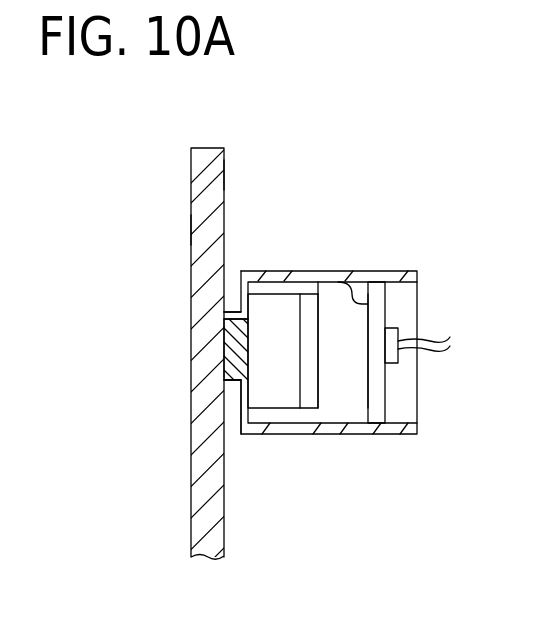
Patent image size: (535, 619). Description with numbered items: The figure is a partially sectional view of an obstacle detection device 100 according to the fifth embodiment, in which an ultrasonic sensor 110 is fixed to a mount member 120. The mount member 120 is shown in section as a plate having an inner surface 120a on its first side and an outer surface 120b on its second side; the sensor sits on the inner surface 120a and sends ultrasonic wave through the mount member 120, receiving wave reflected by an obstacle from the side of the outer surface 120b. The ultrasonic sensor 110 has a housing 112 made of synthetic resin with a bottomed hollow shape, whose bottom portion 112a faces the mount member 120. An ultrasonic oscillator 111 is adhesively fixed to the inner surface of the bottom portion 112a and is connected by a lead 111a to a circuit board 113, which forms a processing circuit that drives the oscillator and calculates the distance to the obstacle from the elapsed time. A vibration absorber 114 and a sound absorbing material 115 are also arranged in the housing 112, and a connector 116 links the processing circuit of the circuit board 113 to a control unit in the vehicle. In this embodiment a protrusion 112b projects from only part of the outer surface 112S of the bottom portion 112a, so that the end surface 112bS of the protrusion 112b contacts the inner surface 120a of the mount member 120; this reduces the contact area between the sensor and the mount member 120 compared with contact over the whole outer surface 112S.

The obstacle detection device 100 is at (340, 210).
The ultrasonic sensor 110 is at (410, 450).
The ultrasonic oscillator 111 is at (283, 396).
The lead 111a is at (352, 303).
The housing 112 is at (325, 271).
The bottom portion 112a is at (236, 295).
The protrusion 112b is at (236, 380).
The outer surface 112S is at (226, 330).
The end surface 112bS is at (230, 382).
The circuit board 113 is at (378, 296).
The vibration absorber 114 is at (338, 403).
The sound absorbing material 115 is at (310, 403).
The connector 116 is at (395, 358).
The mount member 120 is at (178, 180).
The inner surface 120a is at (225, 172).
The outer surface 120b is at (192, 228).